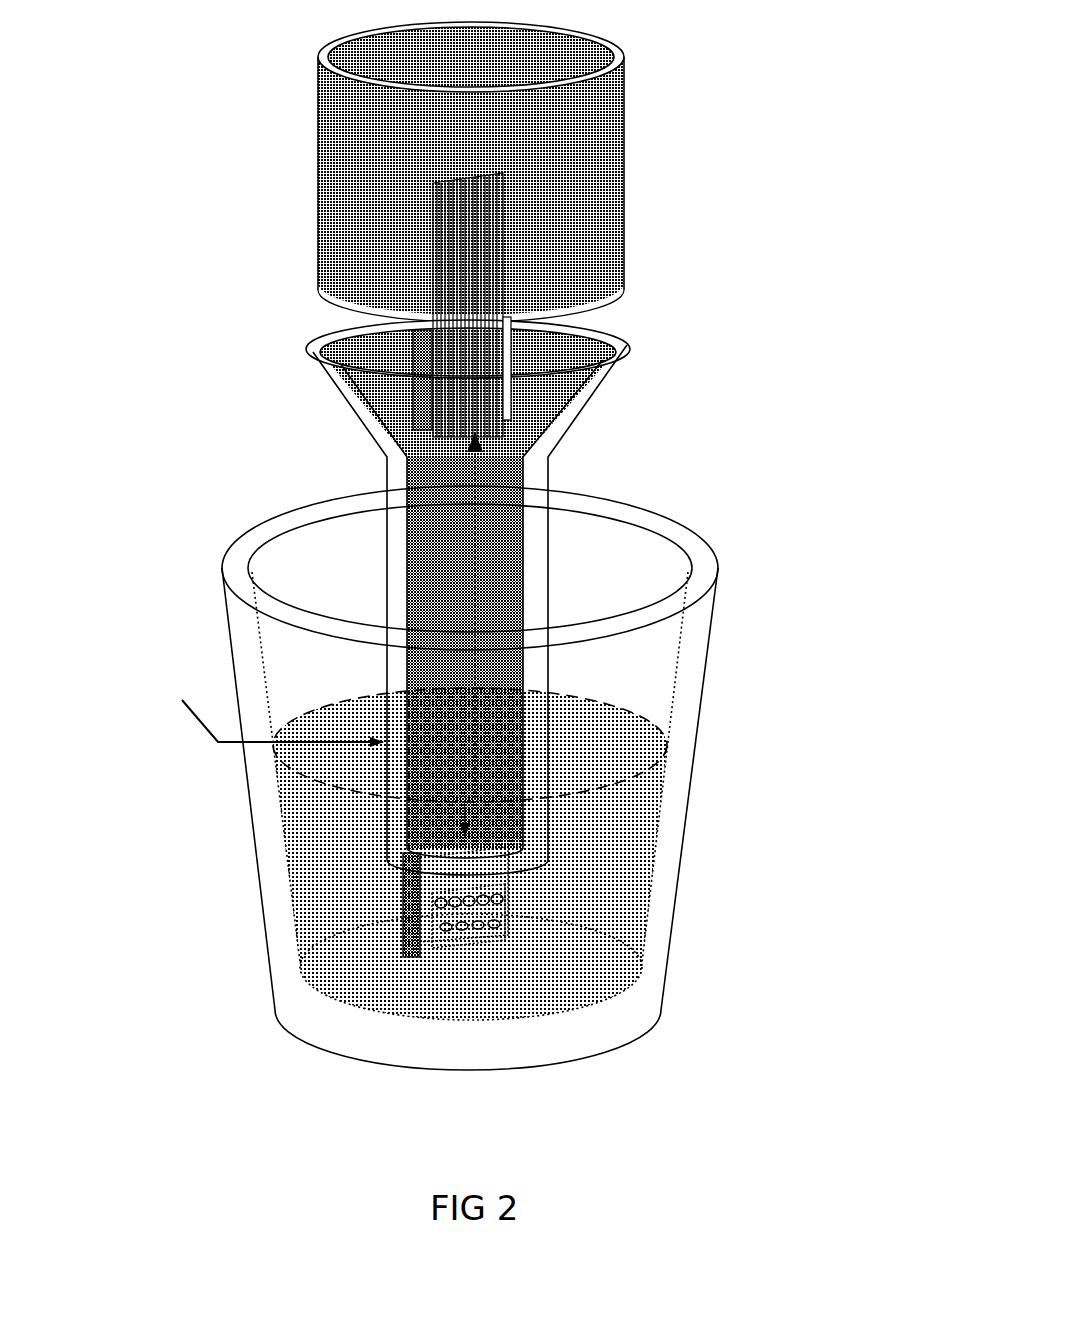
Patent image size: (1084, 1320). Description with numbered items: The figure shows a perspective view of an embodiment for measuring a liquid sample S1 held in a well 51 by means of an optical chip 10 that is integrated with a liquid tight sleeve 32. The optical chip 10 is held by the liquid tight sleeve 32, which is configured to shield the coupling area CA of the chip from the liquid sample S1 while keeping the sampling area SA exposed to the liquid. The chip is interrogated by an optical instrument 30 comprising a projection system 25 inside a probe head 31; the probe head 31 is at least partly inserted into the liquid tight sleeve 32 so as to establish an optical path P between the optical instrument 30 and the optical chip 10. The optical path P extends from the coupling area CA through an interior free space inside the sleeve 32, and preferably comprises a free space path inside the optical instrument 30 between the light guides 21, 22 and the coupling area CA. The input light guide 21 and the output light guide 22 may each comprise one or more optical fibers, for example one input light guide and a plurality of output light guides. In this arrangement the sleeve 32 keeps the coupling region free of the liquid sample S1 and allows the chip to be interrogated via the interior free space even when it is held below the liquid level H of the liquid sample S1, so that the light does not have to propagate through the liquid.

The optical instrument 30 is at (386, 448).
The probe head 31 is at (328, 232).
The liquid tight sleeve 32 is at (393, 462).
The input light guide 21 is at (504, 282).
The output light guide 22 is at (509, 210).
The projection system 25 is at (430, 720).
The optical chip 10 is at (350, 914).
The well 51 is at (542, 778).
The liquid level H is at (274, 704).
The optical path P is at (474, 702).
The coupling area CA is at (466, 806).
The liquid sample S1 is at (604, 896).
The sampling area SA is at (473, 933).